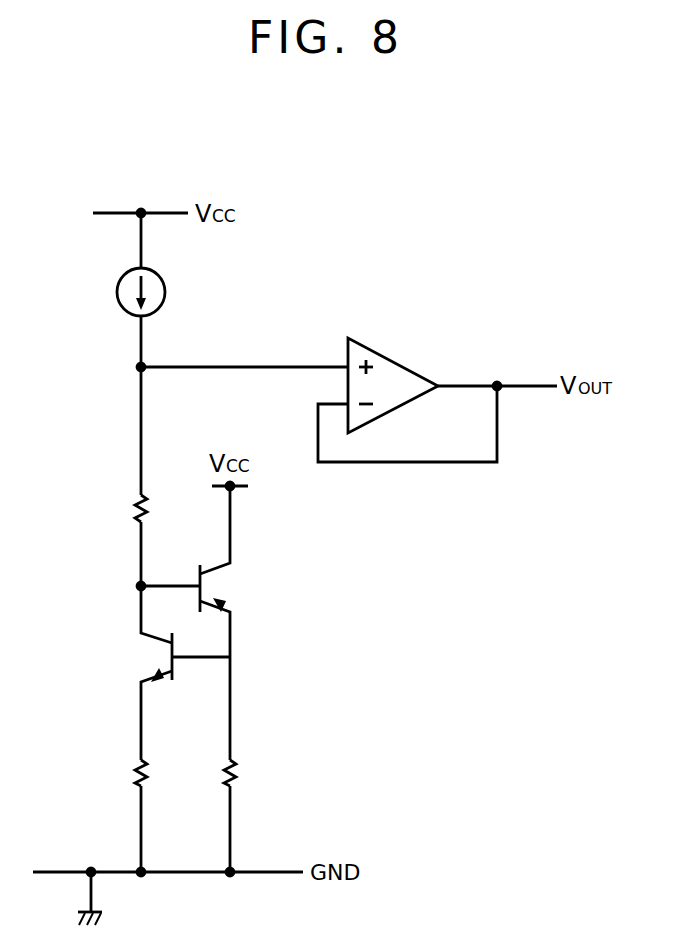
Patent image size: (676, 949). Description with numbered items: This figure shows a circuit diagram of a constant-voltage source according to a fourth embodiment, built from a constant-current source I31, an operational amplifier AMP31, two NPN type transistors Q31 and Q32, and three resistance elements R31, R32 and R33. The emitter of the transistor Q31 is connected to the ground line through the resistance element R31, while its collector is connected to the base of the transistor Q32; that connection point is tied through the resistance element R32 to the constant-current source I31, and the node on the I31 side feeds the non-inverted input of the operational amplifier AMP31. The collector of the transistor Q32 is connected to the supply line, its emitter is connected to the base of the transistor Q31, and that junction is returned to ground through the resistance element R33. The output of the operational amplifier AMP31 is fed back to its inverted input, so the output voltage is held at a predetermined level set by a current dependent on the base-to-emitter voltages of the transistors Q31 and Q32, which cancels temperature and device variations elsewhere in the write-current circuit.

The constant-current source I31 is at (116, 292).
The operational amplifier AMP31 is at (398, 360).
The resistance element R32 is at (137, 510).
The NPN type transistor Q32 is at (220, 584).
The NPN type transistor Q31 is at (148, 656).
The resistance element R31 is at (137, 777).
The resistance element R33 is at (240, 768).